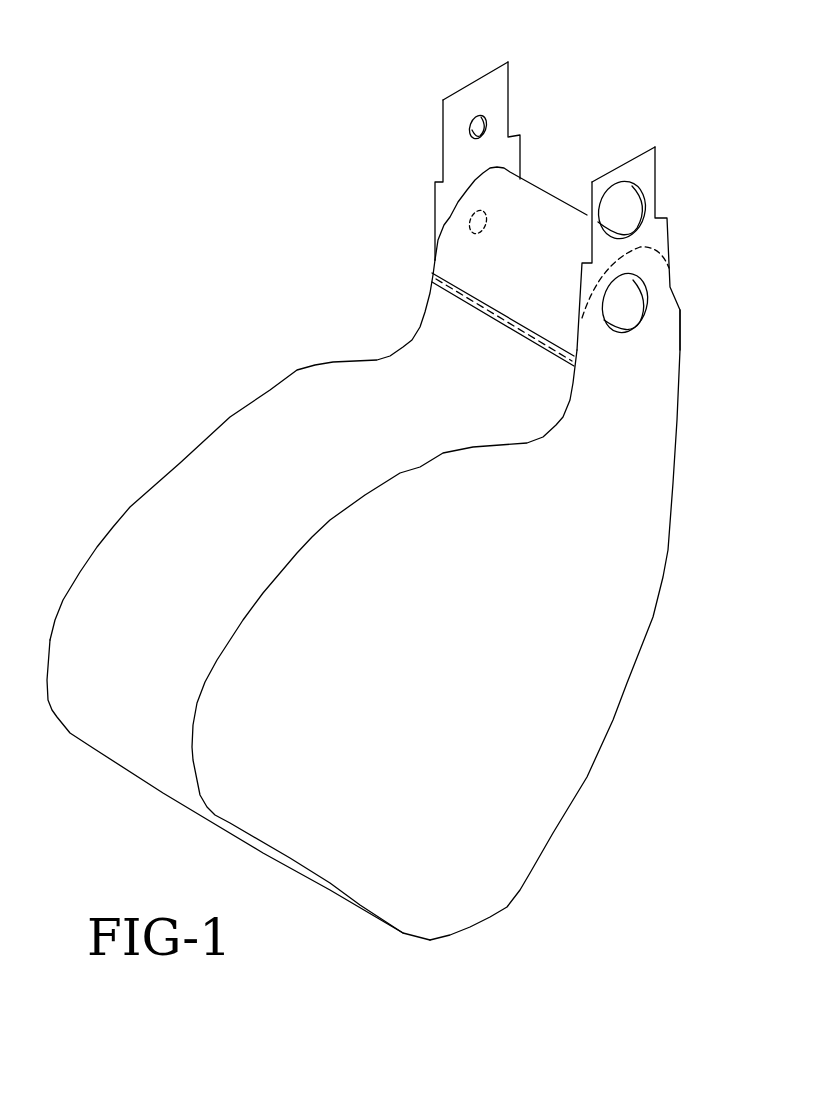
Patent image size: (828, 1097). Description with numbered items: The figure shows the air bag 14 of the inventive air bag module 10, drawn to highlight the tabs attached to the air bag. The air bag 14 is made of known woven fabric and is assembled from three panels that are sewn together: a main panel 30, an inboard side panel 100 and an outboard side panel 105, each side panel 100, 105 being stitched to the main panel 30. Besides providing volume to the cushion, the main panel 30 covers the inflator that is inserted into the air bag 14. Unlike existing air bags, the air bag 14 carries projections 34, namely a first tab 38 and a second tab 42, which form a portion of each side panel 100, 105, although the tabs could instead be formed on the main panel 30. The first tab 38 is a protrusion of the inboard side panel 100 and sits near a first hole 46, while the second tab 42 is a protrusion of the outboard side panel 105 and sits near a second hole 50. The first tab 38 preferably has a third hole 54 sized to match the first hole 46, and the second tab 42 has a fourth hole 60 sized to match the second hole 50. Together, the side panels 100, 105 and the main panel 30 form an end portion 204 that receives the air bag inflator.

The air bag module 10 is at (180, 270).
The air bag 14 is at (295, 370).
The main panel 30 is at (283, 496).
The projections 34 is at (452, 90).
The first tab 38 is at (657, 157).
The second tab 42 is at (442, 123).
The first hole 46 is at (646, 326).
The second hole 50 is at (478, 235).
The third hole 54 is at (637, 200).
The fourth hole 60 is at (472, 130).
The side panel 100 is at (482, 668).
The side panel 105 is at (120, 503).
The end portion 204 is at (422, 172).